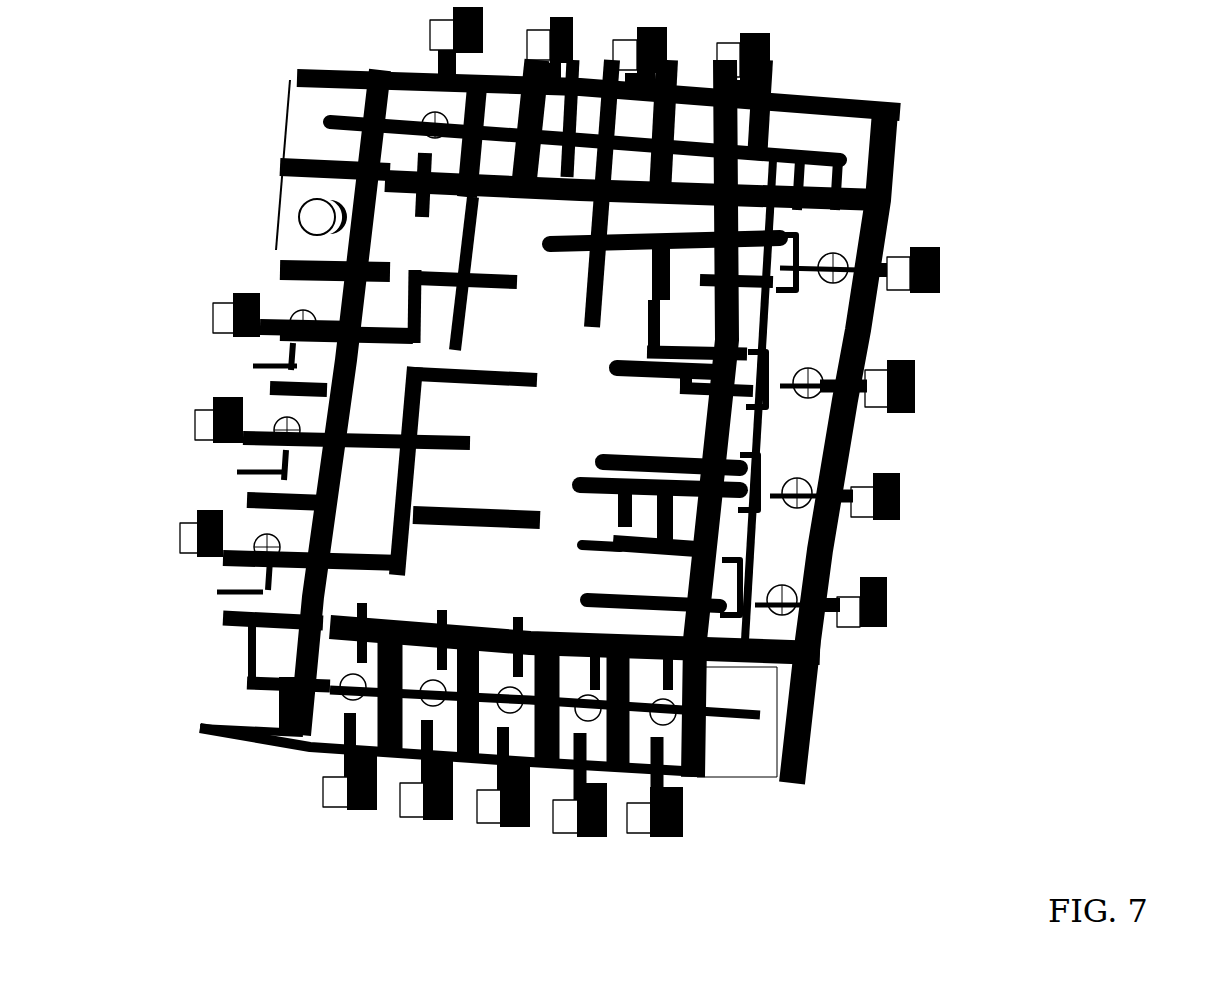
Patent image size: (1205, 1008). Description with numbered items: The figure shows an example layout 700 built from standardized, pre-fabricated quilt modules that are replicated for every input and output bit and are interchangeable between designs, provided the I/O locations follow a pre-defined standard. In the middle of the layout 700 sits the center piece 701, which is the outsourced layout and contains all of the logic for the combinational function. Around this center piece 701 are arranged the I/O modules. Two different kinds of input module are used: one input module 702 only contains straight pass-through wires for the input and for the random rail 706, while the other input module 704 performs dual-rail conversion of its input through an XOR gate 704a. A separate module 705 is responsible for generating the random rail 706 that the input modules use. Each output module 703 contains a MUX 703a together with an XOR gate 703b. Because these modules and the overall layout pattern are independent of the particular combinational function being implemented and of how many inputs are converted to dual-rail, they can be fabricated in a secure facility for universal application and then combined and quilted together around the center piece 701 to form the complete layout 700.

The layout 700 is at (551, 422).
The center piece 701 is at (530, 422).
The input module 702 is at (718, 136).
The output module 703 is at (848, 233).
The MUX 703a is at (750, 452).
The XOR gate 703b is at (812, 514).
The input module 704 is at (262, 418).
The XOR gate 704a is at (300, 452).
The module 705 is at (290, 216).
The random rail 706 is at (245, 638).